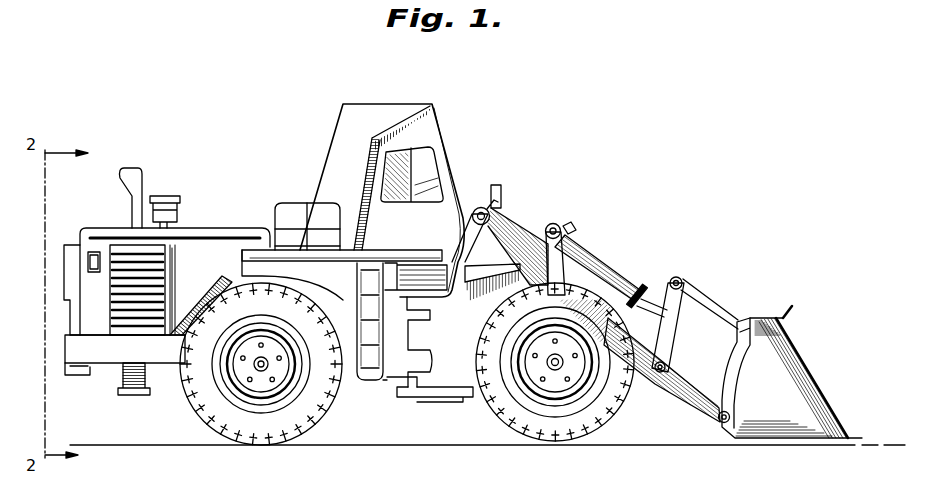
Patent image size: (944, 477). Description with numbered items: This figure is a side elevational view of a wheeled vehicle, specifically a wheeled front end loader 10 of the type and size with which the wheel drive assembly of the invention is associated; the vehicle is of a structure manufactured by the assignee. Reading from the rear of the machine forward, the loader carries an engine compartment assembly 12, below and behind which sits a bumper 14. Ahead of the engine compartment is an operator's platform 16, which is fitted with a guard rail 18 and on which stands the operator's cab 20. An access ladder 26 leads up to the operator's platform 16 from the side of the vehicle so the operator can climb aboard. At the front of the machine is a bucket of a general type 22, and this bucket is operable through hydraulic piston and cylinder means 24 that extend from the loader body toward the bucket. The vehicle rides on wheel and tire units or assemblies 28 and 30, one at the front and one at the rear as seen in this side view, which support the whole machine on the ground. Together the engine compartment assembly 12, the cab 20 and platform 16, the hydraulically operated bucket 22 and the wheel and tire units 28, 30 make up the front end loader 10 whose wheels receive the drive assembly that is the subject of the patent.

The wheeled front end loader 10 is at (584, 161).
The engine compartment assembly 12 is at (228, 232).
The bumper 14 is at (84, 354).
The operator's platform 16 is at (404, 261).
The guard rail 18 is at (298, 206).
The operator's cab 20 is at (440, 140).
The bucket 22 is at (792, 377).
The hydraulic piston and cylinder means 24 is at (617, 280).
The access ladder 26 is at (384, 381).
The wheel and tire unit 28 is at (493, 400).
The wheel and tire unit 30 is at (188, 403).